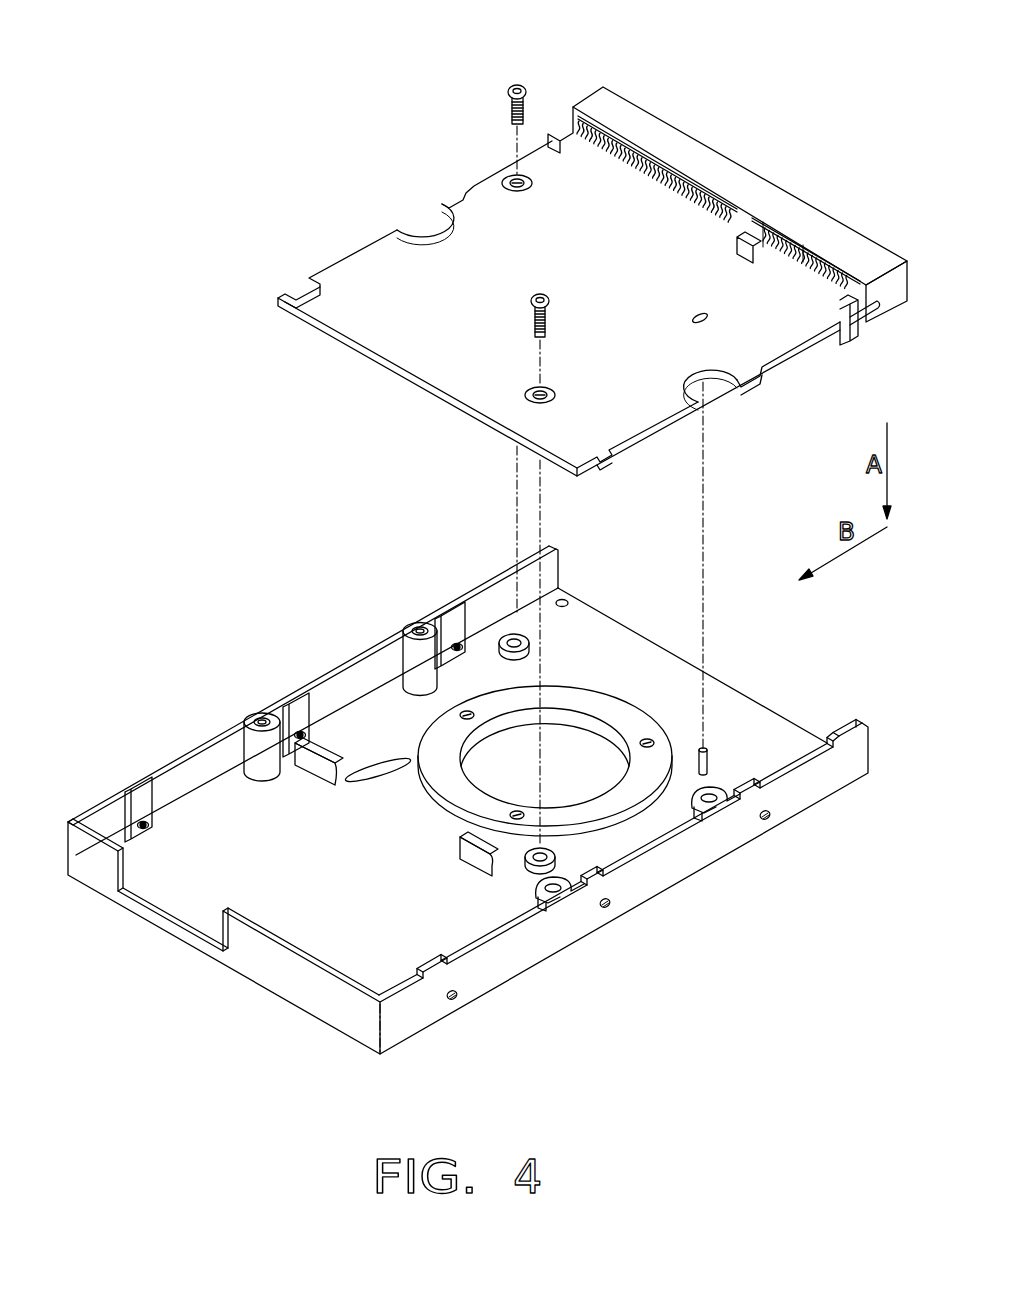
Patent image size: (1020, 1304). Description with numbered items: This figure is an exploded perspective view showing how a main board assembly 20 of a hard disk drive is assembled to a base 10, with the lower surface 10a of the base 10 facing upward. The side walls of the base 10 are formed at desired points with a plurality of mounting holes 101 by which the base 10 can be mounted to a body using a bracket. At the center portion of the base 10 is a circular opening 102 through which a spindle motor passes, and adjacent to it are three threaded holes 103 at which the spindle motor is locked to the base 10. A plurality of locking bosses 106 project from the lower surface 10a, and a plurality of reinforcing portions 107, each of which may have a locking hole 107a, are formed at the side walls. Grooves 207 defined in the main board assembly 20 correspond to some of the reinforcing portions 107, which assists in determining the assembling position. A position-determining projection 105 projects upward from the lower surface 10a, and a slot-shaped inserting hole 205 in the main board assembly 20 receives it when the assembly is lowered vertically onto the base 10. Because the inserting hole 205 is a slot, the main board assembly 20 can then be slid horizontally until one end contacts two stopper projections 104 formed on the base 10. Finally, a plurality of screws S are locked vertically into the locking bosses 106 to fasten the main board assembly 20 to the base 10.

The base 10 is at (734, 857).
The lower surface 10a is at (347, 950).
The mounting holes 101 is at (148, 823).
The circular opening 102 is at (583, 740).
The threaded holes 103 is at (652, 740).
The stopper projections 104 is at (316, 768).
The position-determining projection 105 is at (708, 761).
The locking bosses 106 is at (527, 643).
The reinforcing portions 107 is at (462, 625).
The locking hole 107a is at (418, 627).
The main board assembly 20 is at (427, 140).
The inserting hole 205 is at (700, 313).
The grooves 207 is at (453, 195).
The screws S is at (523, 88).